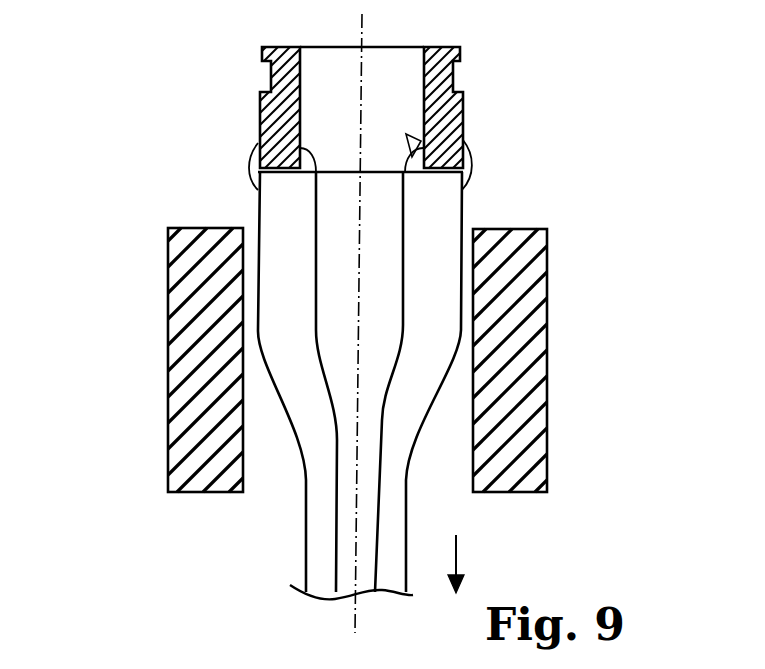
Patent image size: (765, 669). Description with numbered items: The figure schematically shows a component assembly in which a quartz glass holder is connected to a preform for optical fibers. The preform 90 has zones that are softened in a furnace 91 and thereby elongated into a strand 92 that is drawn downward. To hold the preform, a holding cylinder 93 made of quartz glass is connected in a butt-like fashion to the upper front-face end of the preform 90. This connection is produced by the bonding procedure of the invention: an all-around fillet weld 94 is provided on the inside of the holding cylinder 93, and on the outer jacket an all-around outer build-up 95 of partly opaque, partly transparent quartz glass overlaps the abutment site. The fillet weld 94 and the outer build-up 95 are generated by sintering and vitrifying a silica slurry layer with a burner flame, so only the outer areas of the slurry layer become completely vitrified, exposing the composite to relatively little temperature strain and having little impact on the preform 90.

The preform 90 is at (273, 248).
The furnace 91 is at (532, 323).
The strand 92 is at (320, 518).
The holding cylinder 93 is at (450, 118).
The fillet weld 94 is at (410, 137).
The outer build-up 95 is at (255, 162).